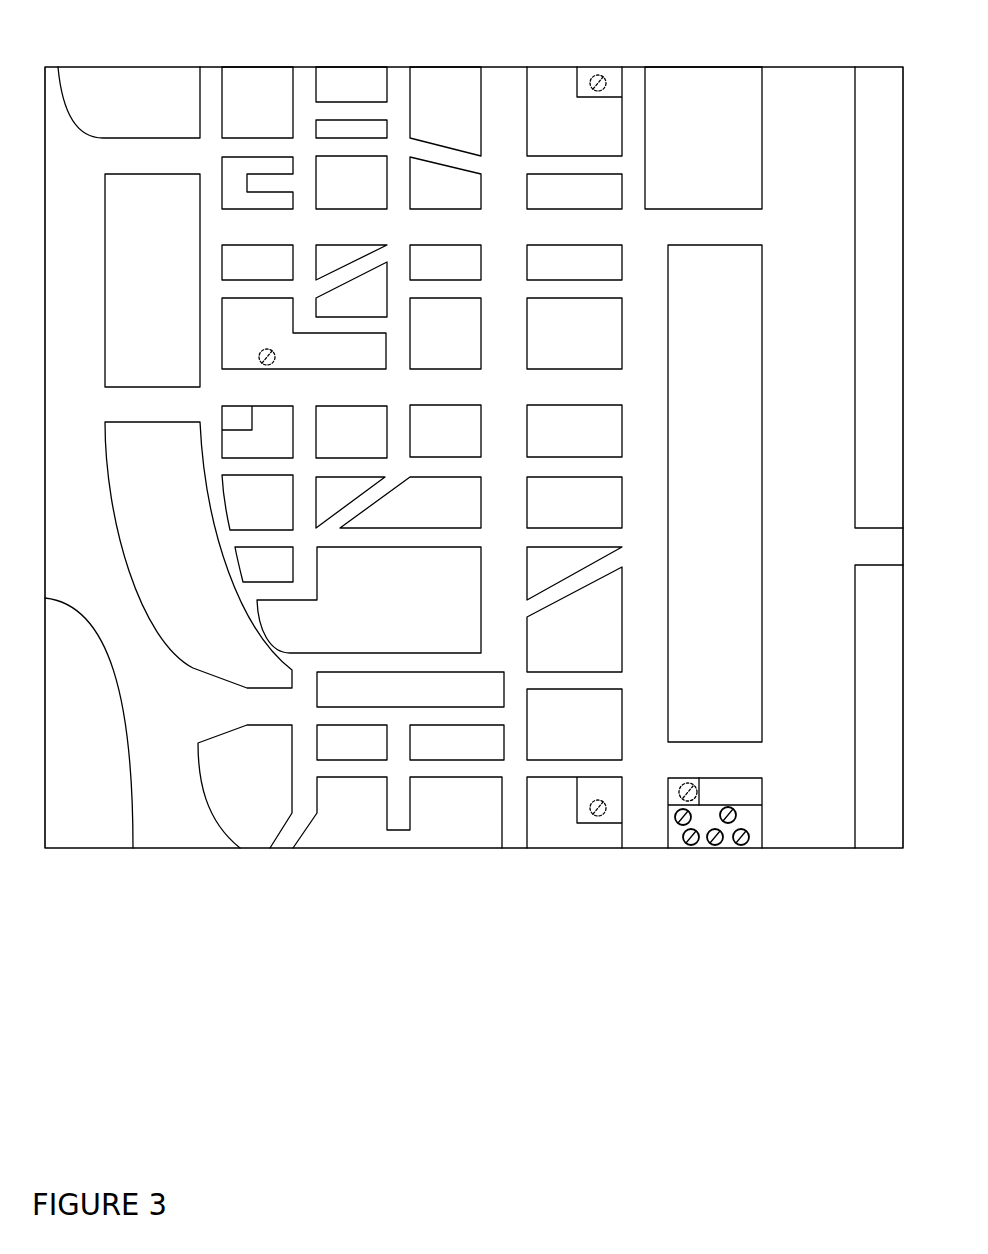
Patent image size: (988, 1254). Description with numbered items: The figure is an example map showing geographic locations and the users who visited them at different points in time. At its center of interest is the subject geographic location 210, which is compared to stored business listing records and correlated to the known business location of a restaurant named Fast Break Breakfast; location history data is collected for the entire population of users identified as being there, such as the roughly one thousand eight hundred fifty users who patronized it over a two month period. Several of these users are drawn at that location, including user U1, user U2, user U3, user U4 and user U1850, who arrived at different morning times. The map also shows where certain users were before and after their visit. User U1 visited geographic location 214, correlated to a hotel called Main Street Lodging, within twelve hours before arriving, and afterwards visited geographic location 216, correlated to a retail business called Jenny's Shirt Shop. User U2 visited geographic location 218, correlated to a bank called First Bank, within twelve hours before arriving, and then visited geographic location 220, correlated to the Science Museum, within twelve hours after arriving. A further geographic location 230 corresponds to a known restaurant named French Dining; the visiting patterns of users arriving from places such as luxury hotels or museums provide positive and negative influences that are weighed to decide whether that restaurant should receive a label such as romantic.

The geographic location 210 is at (743, 792).
The geographic location 214 is at (615, 813).
The geographic location 216 is at (613, 80).
The geographic location 218 is at (685, 783).
The geographic location 220 is at (375, 353).
The geographic location 230 is at (240, 418).
The user U1 is at (598, 75).
The user U2 is at (274, 362).
The user U3 is at (718, 845).
The user U4 is at (745, 845).
The user U1850 is at (740, 818).